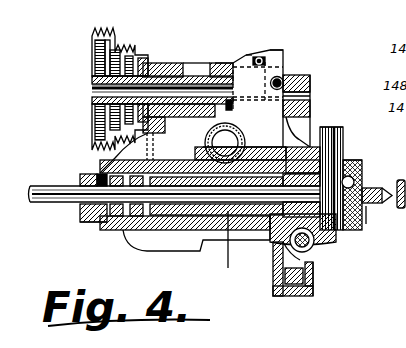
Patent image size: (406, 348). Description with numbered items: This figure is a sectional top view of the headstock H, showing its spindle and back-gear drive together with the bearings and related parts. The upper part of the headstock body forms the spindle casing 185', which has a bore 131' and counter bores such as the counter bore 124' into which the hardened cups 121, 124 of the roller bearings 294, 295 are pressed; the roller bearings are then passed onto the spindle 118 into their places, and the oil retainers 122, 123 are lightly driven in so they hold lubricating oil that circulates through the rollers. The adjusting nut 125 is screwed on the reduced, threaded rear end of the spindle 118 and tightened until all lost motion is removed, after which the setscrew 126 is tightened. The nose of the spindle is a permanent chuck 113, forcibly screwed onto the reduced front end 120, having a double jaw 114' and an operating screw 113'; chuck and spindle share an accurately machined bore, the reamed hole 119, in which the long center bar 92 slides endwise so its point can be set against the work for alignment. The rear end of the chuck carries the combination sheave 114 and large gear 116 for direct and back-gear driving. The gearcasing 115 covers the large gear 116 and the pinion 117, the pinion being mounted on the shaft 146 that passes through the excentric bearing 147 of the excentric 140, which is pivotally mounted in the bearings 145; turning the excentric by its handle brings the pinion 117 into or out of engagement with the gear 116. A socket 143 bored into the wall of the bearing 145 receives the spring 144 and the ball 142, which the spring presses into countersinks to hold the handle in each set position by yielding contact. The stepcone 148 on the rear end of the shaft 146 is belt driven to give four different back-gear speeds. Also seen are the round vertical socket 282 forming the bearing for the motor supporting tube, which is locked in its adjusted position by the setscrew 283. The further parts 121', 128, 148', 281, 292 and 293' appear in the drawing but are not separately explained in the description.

The long center bar 92 is at (58, 202).
The permanent chuck 113 is at (364, 182).
The operating screw 113' is at (374, 150).
The combination sheave 114 is at (327, 174).
The double jaw 114' is at (376, 222).
The gearcasing 115 is at (320, 292).
The large gear 116 is at (291, 292).
The pinion 117 is at (303, 75).
The spindle 118 is at (182, 160).
The reamed hole 119 is at (190, 241).
The reduced front end 120 is at (401, 194).
The cup 121 is at (314, 137).
The cam 121' is at (320, 259).
The oil retainer 122 is at (266, 150).
The oil retainer 123 is at (137, 232).
The cup 124 is at (172, 230).
The counter bore 124' is at (153, 157).
The adjusting nut 125 is at (80, 217).
The setscrew 126 is at (92, 163).
The drill tip 128 is at (405, 164).
The bore 131' is at (239, 247).
The excentric 140 is at (176, 70).
The ball 142 is at (283, 50).
The socket 143 is at (253, 62).
The spring 144 is at (263, 53).
The bearing 145 is at (160, 63).
The shaft 146 is at (95, 100).
The excentric bearing 147 is at (179, 118).
The stepcone 148 is at (97, 52).
The gear ring 148' is at (70, 69).
The spindle casing 185' is at (250, 233).
The slide 281 is at (162, 82).
The vertical socket 282 is at (216, 67).
The setscrew 283 is at (271, 84).
The spring 292 is at (313, 264).
The spring clip 293' is at (327, 255).
The roller bearing 294 is at (346, 157).
The roller bearing 295 is at (80, 222).
The headstock H is at (200, 251).